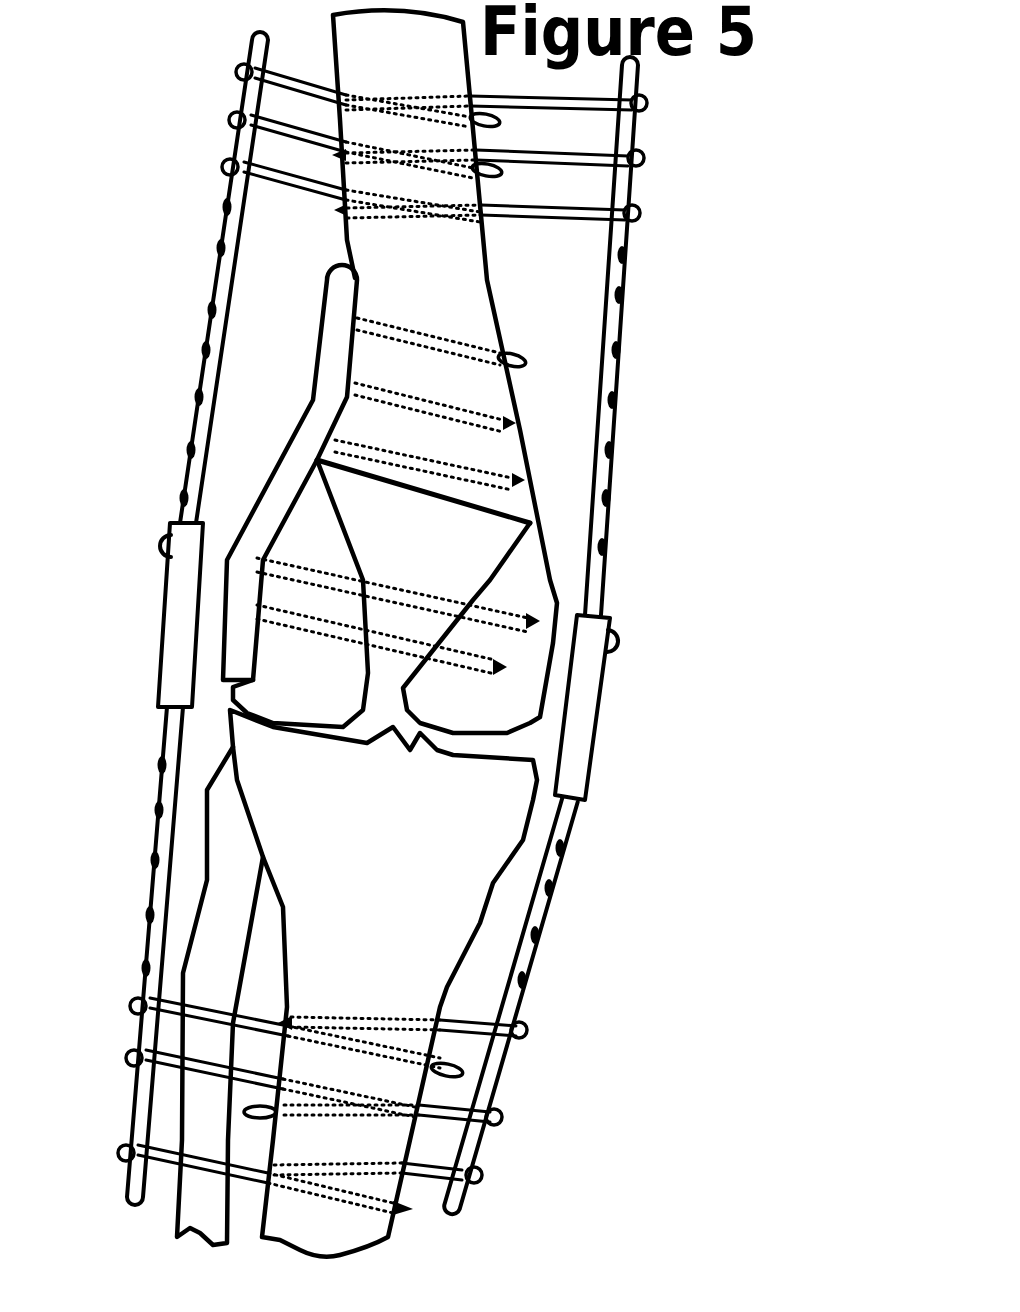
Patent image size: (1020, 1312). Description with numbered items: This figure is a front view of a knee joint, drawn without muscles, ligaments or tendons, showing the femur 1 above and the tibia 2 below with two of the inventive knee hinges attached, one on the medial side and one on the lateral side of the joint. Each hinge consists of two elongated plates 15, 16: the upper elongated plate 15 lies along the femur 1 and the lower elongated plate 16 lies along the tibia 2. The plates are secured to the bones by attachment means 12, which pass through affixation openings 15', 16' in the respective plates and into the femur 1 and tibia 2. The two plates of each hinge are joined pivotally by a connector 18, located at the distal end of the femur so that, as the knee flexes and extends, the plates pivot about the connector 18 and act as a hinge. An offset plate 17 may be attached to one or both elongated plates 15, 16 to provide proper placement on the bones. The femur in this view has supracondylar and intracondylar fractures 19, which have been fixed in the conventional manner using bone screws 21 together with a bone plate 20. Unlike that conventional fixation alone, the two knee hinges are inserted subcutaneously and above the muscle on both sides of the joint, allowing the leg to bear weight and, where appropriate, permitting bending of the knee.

The femur 1 is at (395, 371).
The tibia 2 is at (357, 983).
The attachment means 12 is at (234, 162).
The elongated plate 15 is at (415, 323).
The affixation openings 15' is at (418, 377).
The elongated plate 16 is at (344, 960).
The affixation openings 16' is at (362, 872).
The offset plate 17 is at (180, 667).
The connector 18 is at (160, 547).
The supracondylar and intracondylar fractures 19 is at (330, 507).
The bone plate 20 is at (320, 417).
The bone screws 21 is at (492, 670).